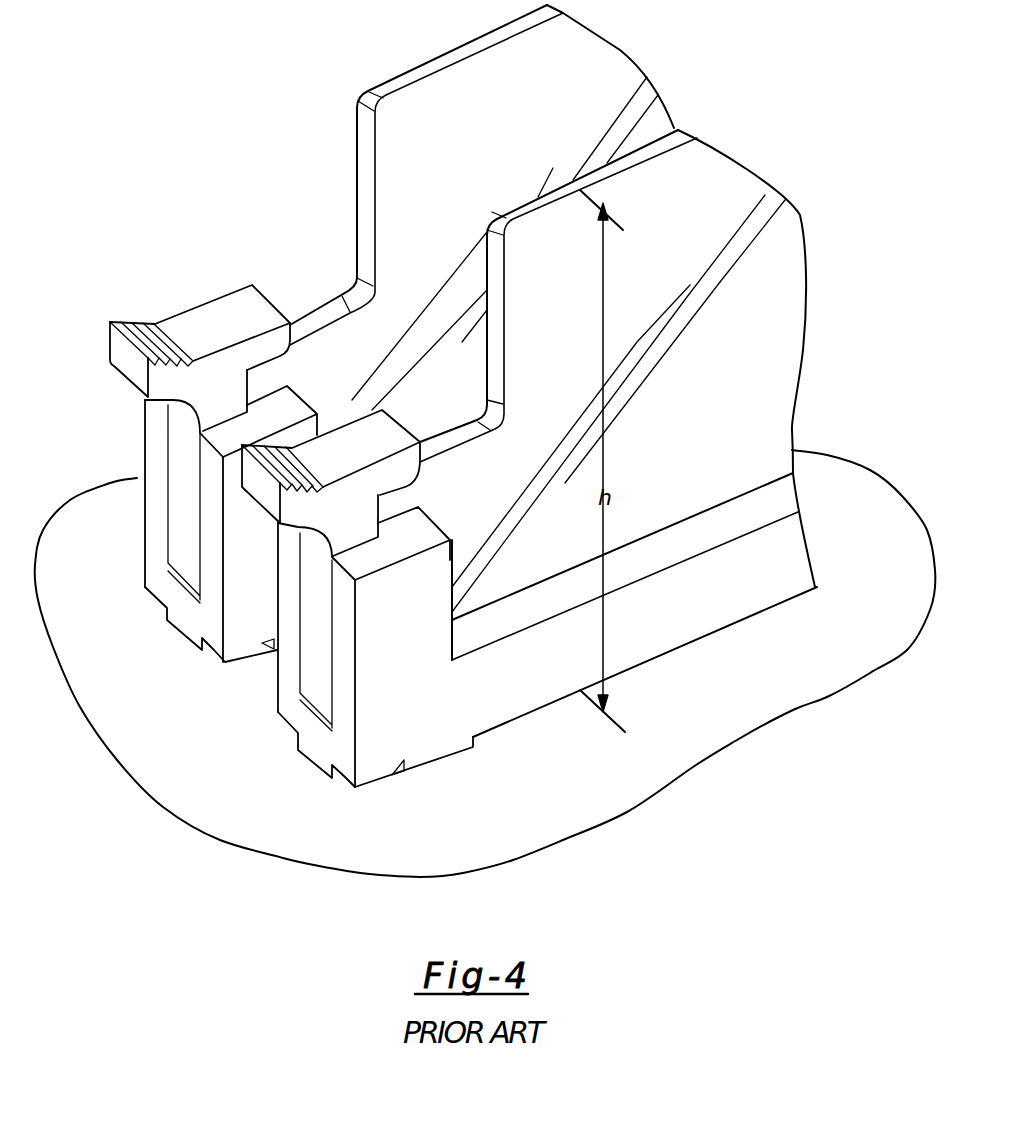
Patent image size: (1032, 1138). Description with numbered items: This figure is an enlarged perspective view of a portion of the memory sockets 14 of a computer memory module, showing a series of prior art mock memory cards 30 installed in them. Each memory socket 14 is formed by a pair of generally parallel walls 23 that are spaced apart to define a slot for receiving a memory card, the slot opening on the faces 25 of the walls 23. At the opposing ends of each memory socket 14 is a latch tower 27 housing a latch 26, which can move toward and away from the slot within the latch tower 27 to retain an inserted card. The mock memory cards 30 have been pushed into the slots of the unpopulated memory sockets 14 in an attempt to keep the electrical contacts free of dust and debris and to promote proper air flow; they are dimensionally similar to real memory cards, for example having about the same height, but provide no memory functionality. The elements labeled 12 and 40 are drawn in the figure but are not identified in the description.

The ground / support surface 12 is at (708, 737).
The memory socket 14 is at (240, 640).
The walls 23 is at (808, 554).
The faces 25 is at (683, 543).
The latch 26 is at (193, 327).
The latch tower 27 is at (157, 442).
The mock memory card 30 is at (600, 70).
The plate 40 is at (272, 304).